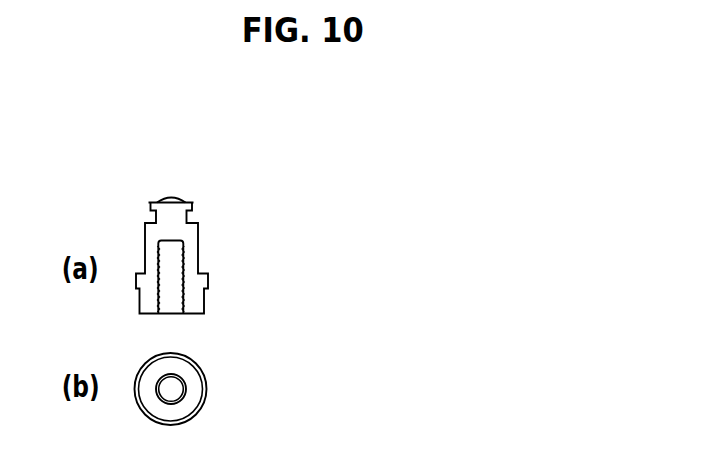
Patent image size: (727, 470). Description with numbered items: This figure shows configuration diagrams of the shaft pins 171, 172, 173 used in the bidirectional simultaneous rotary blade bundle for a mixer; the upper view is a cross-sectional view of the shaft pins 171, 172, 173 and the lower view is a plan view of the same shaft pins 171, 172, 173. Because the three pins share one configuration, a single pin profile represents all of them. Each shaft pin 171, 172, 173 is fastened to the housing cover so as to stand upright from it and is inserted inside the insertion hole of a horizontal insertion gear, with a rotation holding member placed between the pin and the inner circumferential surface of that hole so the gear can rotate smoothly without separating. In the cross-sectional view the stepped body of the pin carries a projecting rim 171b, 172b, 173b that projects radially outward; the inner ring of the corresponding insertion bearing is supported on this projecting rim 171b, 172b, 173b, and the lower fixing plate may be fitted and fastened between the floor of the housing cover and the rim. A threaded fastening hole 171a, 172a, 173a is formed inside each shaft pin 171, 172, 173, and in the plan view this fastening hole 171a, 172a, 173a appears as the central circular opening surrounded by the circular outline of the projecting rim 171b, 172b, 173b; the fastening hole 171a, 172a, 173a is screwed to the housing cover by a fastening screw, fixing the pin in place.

The shaft pin 171 is at (341, 274).
The shaft pin 172 is at (341, 274).
The shaft pin 173 is at (214, 200).
The fastening hole 171a is at (342, 323).
The fastening hole 172a is at (342, 323).
The fastening hole 173a is at (173, 298).
The projecting rim 171b is at (341, 312).
The projecting rim 172b is at (341, 312).
The projecting rim 173b is at (208, 277).